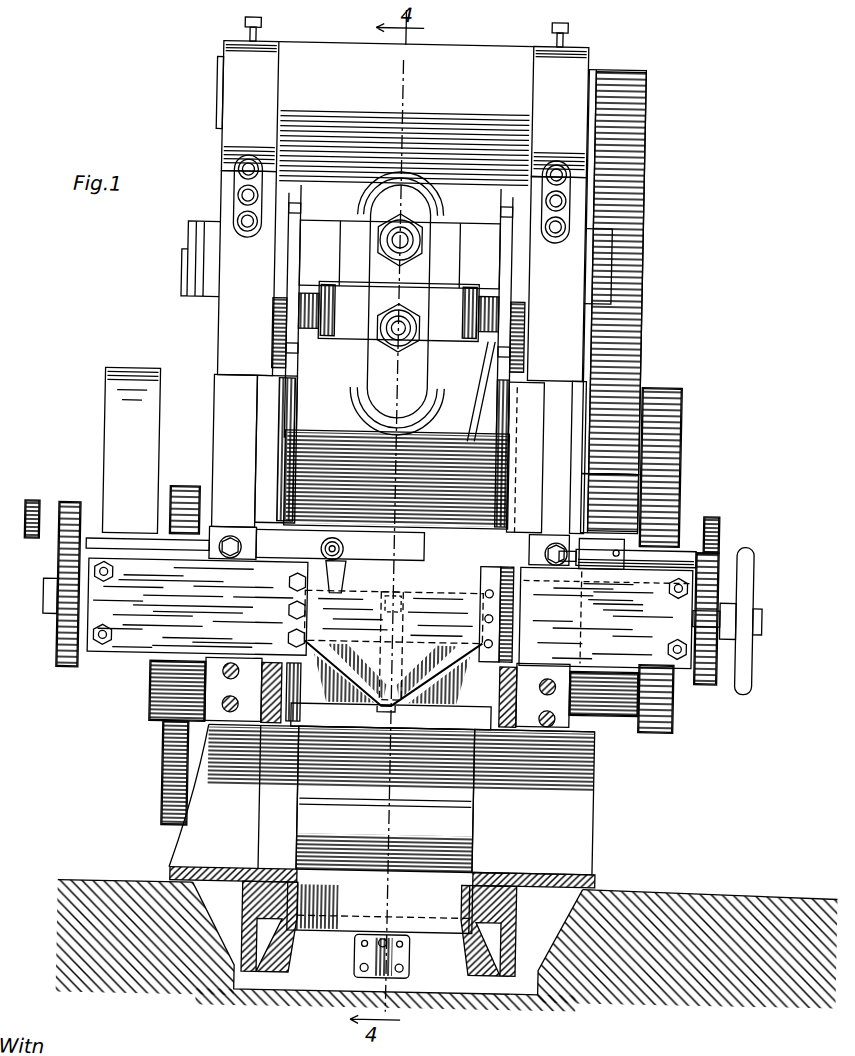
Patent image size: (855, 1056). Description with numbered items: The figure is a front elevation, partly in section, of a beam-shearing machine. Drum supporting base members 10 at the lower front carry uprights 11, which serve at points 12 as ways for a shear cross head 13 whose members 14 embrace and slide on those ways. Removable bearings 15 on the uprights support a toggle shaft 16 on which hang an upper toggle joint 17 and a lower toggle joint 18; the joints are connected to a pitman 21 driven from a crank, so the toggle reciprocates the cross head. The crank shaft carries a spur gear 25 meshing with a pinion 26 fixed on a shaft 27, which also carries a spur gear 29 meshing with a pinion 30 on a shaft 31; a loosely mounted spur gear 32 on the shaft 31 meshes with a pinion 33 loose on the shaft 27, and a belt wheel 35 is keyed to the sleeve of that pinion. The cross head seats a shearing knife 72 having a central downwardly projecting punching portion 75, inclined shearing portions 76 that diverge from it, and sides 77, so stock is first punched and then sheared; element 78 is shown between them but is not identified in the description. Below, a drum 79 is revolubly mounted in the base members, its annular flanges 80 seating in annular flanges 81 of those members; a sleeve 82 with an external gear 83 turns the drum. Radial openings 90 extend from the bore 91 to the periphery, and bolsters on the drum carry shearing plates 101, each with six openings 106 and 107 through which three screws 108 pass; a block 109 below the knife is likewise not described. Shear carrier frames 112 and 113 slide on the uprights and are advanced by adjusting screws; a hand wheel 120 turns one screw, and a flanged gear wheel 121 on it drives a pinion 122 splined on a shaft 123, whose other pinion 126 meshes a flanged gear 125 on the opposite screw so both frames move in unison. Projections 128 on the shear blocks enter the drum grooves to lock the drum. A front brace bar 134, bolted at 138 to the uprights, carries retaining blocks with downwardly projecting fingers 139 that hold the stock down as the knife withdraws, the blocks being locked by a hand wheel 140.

The drum supporting base members 10 is at (195, 862).
The uprights 11 is at (225, 396).
The ways 12 is at (268, 380).
The shear cross head 13 is at (397, 479).
The members 14 is at (255, 452).
The removable bearings 15 is at (243, 106).
The toggle shaft 16 is at (214, 72).
The upper toggle joint 17 is at (398, 306).
The lower toggle joint 18 is at (383, 411).
The pitman 21 is at (402, 320).
The spur gear 25 is at (644, 300).
The pinion 26 is at (630, 490).
The shaft 27 is at (680, 515).
The spur gear 29 is at (680, 408).
The pinion 30 is at (672, 730).
The shaft 31 is at (682, 720).
The spur gear 32 is at (160, 790).
The pinion 33 is at (183, 488).
The belt wheel 35 is at (115, 455).
The shearing knife 72 is at (400, 599).
The punching portion 75 is at (408, 700).
The inclined shearing portions 76 is at (393, 665).
The sides of the knife 77 is at (485, 582).
The center block 78 is at (395, 646).
The drum 79 is at (463, 818).
The annular flanges 80 is at (305, 890).
The annular flanges 81 is at (262, 682).
The sleeve 82 is at (583, 808).
The external gear 83 is at (595, 755).
The radially disposed openings 90 is at (368, 795).
The bore 91 is at (295, 808).
The shearing plates 101 is at (365, 948).
The openings 106 is at (416, 945).
The openings 107 is at (366, 968).
The screws 108 is at (418, 966).
The block 109 is at (389, 696).
The shear carrier frame 112 is at (606, 617).
The shear carrier frame 113 is at (197, 606).
The hand wheel 120 is at (754, 590).
The flanged gear wheel 121 is at (711, 632).
The pinion 122 is at (718, 540).
The shaft 123 is at (60, 550).
The flanged gear 125 is at (78, 665).
The pinion 126 is at (64, 515).
The projections 128 is at (402, 613).
The front brace bar 134 is at (192, 608).
The bolts 138 is at (234, 538).
The fingers 139 is at (354, 577).
The hand wheel 140 is at (325, 552).